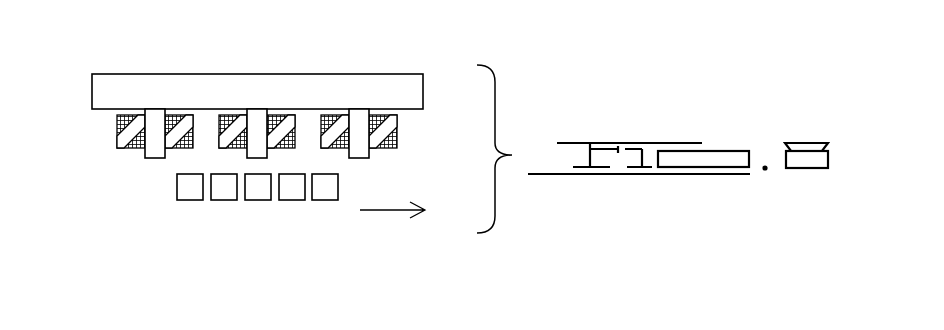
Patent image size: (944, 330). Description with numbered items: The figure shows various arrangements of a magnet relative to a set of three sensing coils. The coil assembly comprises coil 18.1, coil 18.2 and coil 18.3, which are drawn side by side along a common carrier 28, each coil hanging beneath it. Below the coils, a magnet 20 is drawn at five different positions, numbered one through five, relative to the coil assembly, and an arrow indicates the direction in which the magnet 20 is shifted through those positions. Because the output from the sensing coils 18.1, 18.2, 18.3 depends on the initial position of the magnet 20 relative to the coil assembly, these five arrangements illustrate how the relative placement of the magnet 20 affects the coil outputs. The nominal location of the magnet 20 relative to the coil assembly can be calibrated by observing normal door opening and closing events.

The carrier bar 28 is at (423, 92).
The coil 1 18.1 is at (183, 70).
The coil 2 18.2 is at (287, 70).
The coil 3 18.3 is at (389, 70).
The magnet 20 is at (184, 190).